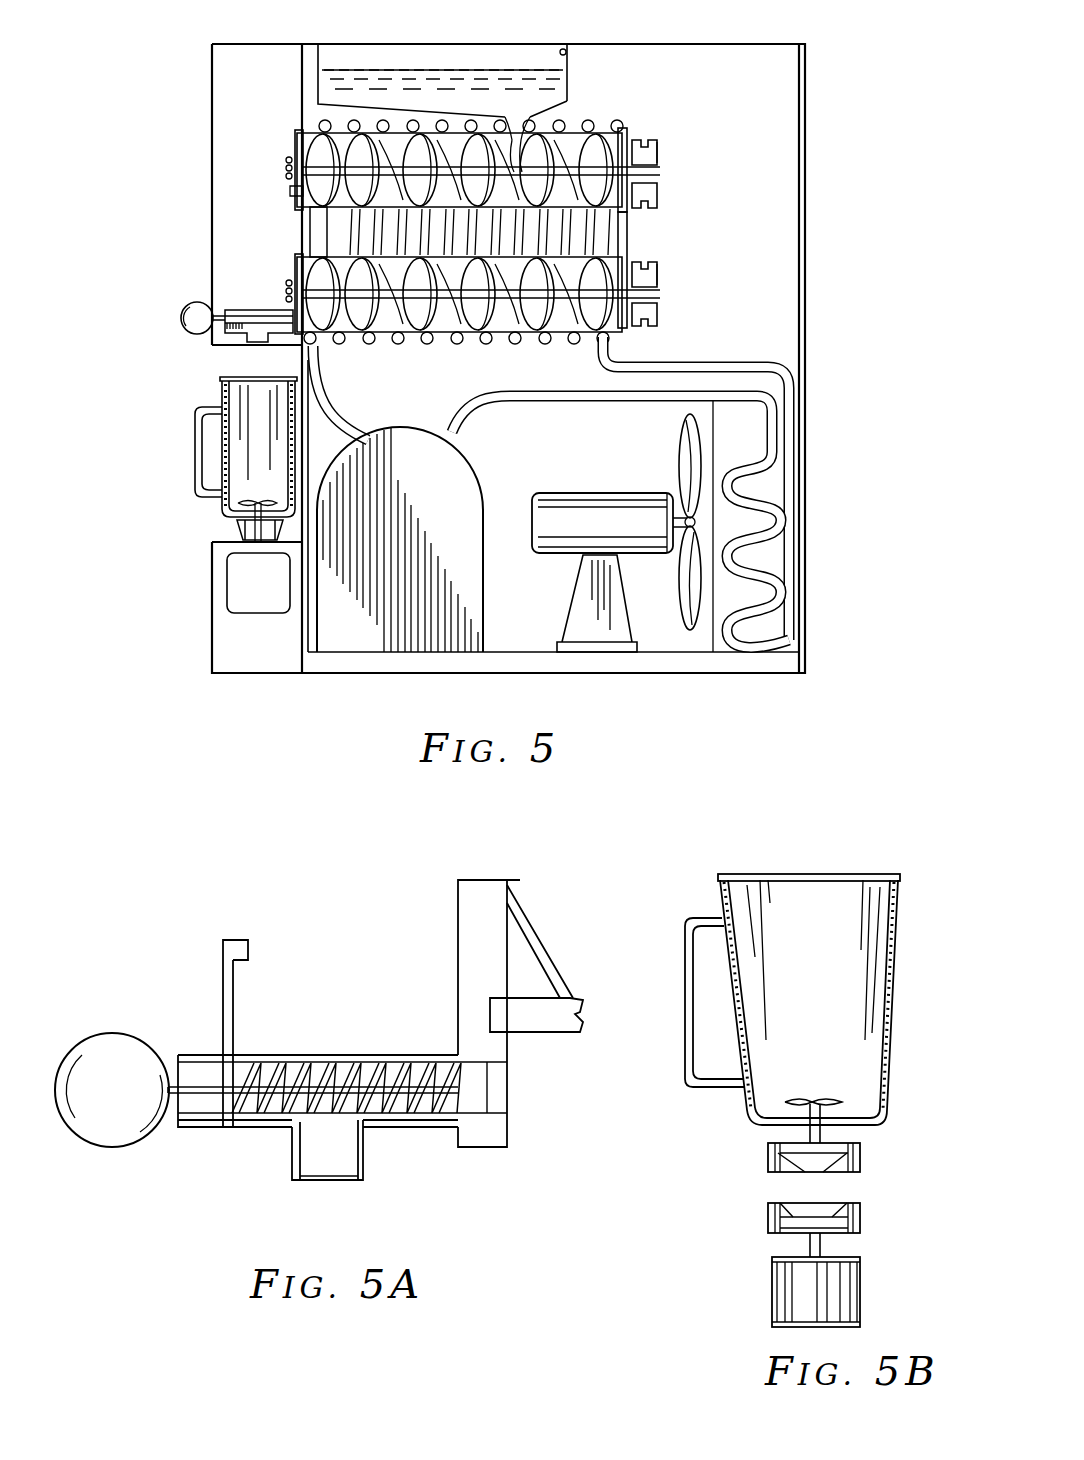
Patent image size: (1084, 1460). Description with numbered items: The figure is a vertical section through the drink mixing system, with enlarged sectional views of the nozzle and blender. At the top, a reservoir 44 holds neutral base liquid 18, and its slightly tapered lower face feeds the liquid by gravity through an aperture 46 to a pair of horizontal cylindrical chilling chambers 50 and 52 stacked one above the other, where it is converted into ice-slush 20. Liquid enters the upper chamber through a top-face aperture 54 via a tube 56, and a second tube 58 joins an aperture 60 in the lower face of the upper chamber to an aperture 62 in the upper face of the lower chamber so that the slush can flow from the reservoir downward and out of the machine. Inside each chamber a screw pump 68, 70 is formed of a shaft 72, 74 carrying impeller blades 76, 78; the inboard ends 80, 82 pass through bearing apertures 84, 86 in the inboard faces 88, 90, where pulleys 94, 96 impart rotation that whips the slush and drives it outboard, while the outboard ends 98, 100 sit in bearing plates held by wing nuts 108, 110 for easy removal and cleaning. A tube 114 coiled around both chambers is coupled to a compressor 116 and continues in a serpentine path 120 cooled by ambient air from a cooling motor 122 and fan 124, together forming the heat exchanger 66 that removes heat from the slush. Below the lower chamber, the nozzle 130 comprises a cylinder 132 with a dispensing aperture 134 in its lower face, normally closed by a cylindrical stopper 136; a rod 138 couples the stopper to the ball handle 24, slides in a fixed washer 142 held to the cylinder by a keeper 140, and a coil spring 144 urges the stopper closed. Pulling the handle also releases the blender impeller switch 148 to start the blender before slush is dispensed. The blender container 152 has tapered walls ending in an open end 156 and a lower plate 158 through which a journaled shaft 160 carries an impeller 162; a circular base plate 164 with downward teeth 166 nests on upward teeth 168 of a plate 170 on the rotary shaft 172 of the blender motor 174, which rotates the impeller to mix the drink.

In FIG. 5, the neutral base liquid 18 is at (452, 66).
In FIG. 5, the ice-slush 20 is at (298, 200).
In FIG. 5A, the handle 24 is at (122, 1147).
In FIG. 5, the reservoir 44 is at (567, 53).
In FIG. 5, the aperture 46 is at (531, 116).
In FIG. 5, the upper chilling chamber 50 is at (338, 140).
In FIG. 5, the lower chilling chamber 52 is at (503, 332).
In FIG. 5, the top face aperture of upper chamber 54 is at (513, 133).
In FIG. 5, the tube 56 is at (568, 103).
In FIG. 5, the second tube 58 is at (335, 238).
In FIG. 5, the aperture in lower face of upper chamber 60 is at (338, 212).
In FIG. 5, the aperture in upper face of lower chamber 62 is at (330, 262).
In FIG. 5, the heat exchanger 66 is at (762, 355).
In FIG. 5, the upper screw pump 68 is at (627, 232).
In FIG. 5, the lower screw pump 70 is at (553, 344).
In FIG. 5, the shaft of upper screw pump 72 is at (375, 178).
In FIG. 5, the shaft of lower screw pump 74 is at (410, 344).
In FIG. 5A, the shaft of lower screw pump 74 is at (552, 1033).
In FIG. 5, the impeller blades of upper screw pump 76 is at (320, 165).
In FIG. 5, the impeller blades of lower screw pump 78 is at (345, 344).
In FIG. 5A, the impeller blades of lower screw pump 78 is at (545, 970).
In FIG. 5, the inboard end of upper shaft 80 is at (660, 167).
In FIG. 5, the inboard end of lower shaft 82 is at (658, 297).
In FIG. 5, the bearing aperture of upper chamber 84 is at (658, 196).
In FIG. 5, the bearing aperture of lower chamber 86 is at (611, 340).
In FIG. 5, the inboard face of upper chamber 88 is at (657, 140).
In FIG. 5, the inboard face of lower chamber 90 is at (657, 263).
In FIG. 5, the pulley of upper screw pump 94 is at (658, 146).
In FIG. 5, the pulley of lower screw pump 96 is at (660, 280).
In FIG. 5, the outboard end of upper shaft 98 is at (291, 191).
In FIG. 5, the outboard end of lower shaft 100 is at (297, 343).
In FIG. 5, the wing nut 108 is at (286, 163).
In FIG. 5, the wing nut 110 is at (286, 292).
In FIG. 5, the coiled tube 114 is at (622, 126).
In FIG. 5, the compressor 116 is at (372, 655).
In FIG. 5, the serpentine path 120 is at (745, 487).
In FIG. 5, the cooling motor 122 is at (577, 493).
In FIG. 5, the fan 124 is at (690, 632).
In FIG. 5A, the nozzle 130 is at (393, 1143).
In FIG. 5A, the cylinder 132 is at (292, 1150).
In FIG. 5A, the dispensing aperture 134 is at (330, 1181).
In FIG. 5A, the stopper 136 is at (453, 1128).
In FIG. 5A, the rod 138 is at (412, 1066).
In FIG. 5A, the keeper 140 is at (245, 943).
In FIG. 5A, the washer 142 is at (219, 1058).
In FIG. 5A, the coil spring 144 is at (330, 1066).
In FIG. 5, the blender impeller switch 148 is at (233, 340).
In FIG. 5A, the blender impeller switch 148 is at (193, 1128).
In FIG. 5B, the container 152 is at (899, 932).
In FIG. 5B, the open end 156 is at (860, 874).
In FIG. 5B, the plate 158 is at (768, 1130).
In FIG. 5B, the shaft 160 is at (823, 1118).
In FIG. 5B, the impeller 162 is at (833, 1098).
In FIG. 5B, the circular base plate 164 is at (860, 1150).
In FIG. 5B, the teeth 166 is at (812, 1176).
In FIG. 5B, the teeth 168 is at (810, 1205).
In FIG. 5B, the plate 170 is at (772, 1212).
In FIG. 5B, the rotary shaft 172 is at (825, 1248).
In FIG. 5B, the blender motor 174 is at (860, 1296).